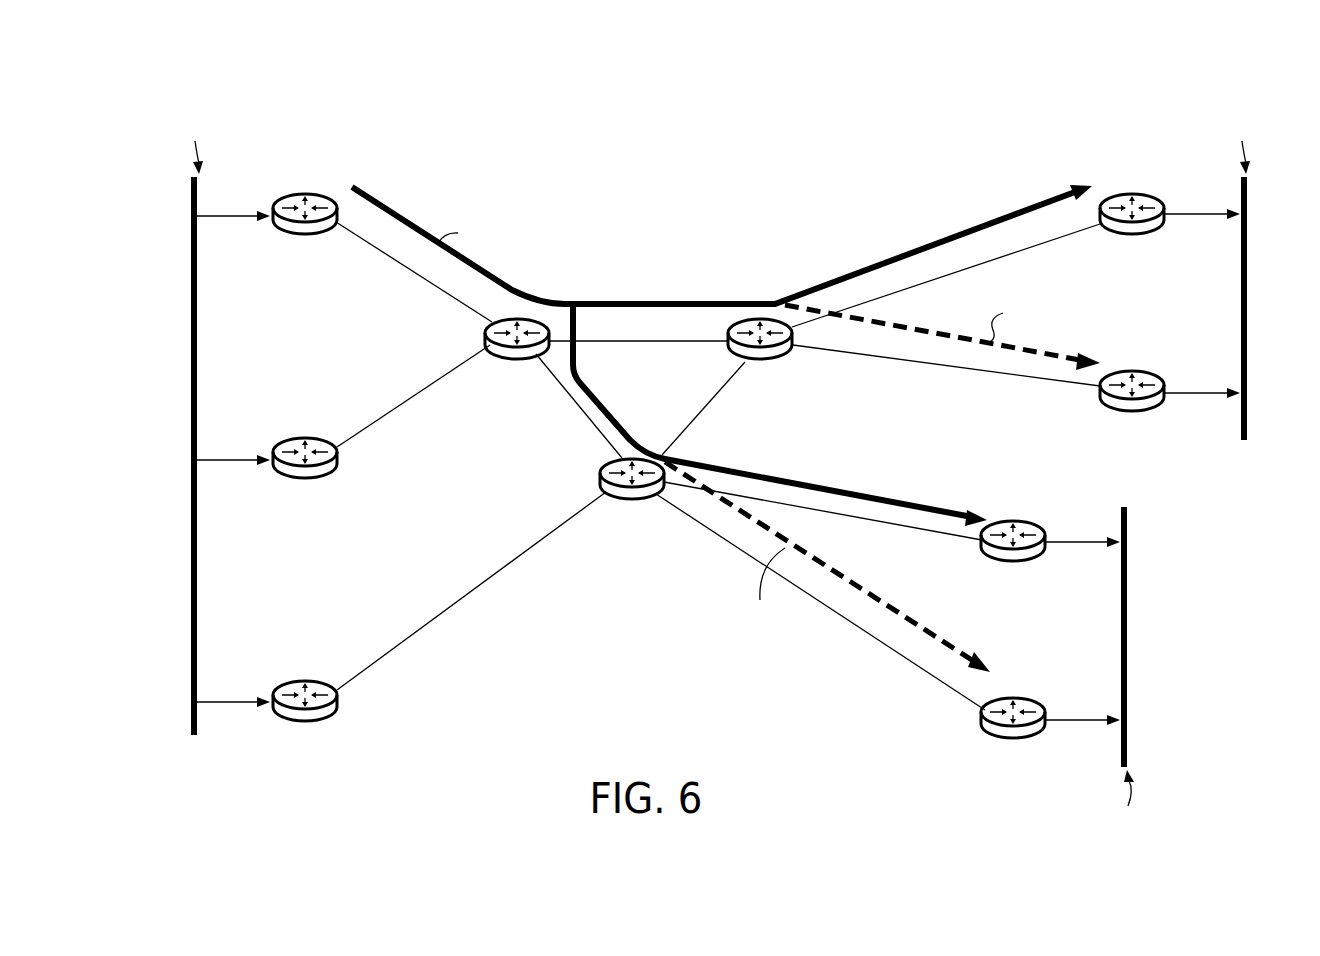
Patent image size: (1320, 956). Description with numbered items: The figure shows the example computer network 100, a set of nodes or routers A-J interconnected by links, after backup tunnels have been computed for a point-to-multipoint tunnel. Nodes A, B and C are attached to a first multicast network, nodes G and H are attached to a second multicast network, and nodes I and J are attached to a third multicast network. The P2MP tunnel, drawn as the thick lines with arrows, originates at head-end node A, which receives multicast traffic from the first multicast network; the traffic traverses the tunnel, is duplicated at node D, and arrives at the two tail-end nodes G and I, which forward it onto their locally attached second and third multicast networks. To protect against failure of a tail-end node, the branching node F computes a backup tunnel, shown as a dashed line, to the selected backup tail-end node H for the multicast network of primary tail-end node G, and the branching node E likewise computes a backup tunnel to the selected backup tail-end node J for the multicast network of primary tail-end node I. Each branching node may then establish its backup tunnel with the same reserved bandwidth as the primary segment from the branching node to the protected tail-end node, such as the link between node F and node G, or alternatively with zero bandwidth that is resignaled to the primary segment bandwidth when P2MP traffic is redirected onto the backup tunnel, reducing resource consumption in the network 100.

The computer network 100 is at (916, 91).
The node A is at (290, 202).
The node B is at (290, 445).
The node C is at (290, 690).
The node D is at (512, 361).
The node E is at (599, 482).
The node F is at (777, 364).
The node G is at (1147, 238).
The node H is at (1147, 418).
The node I is at (1028, 566).
The node J is at (1028, 744).